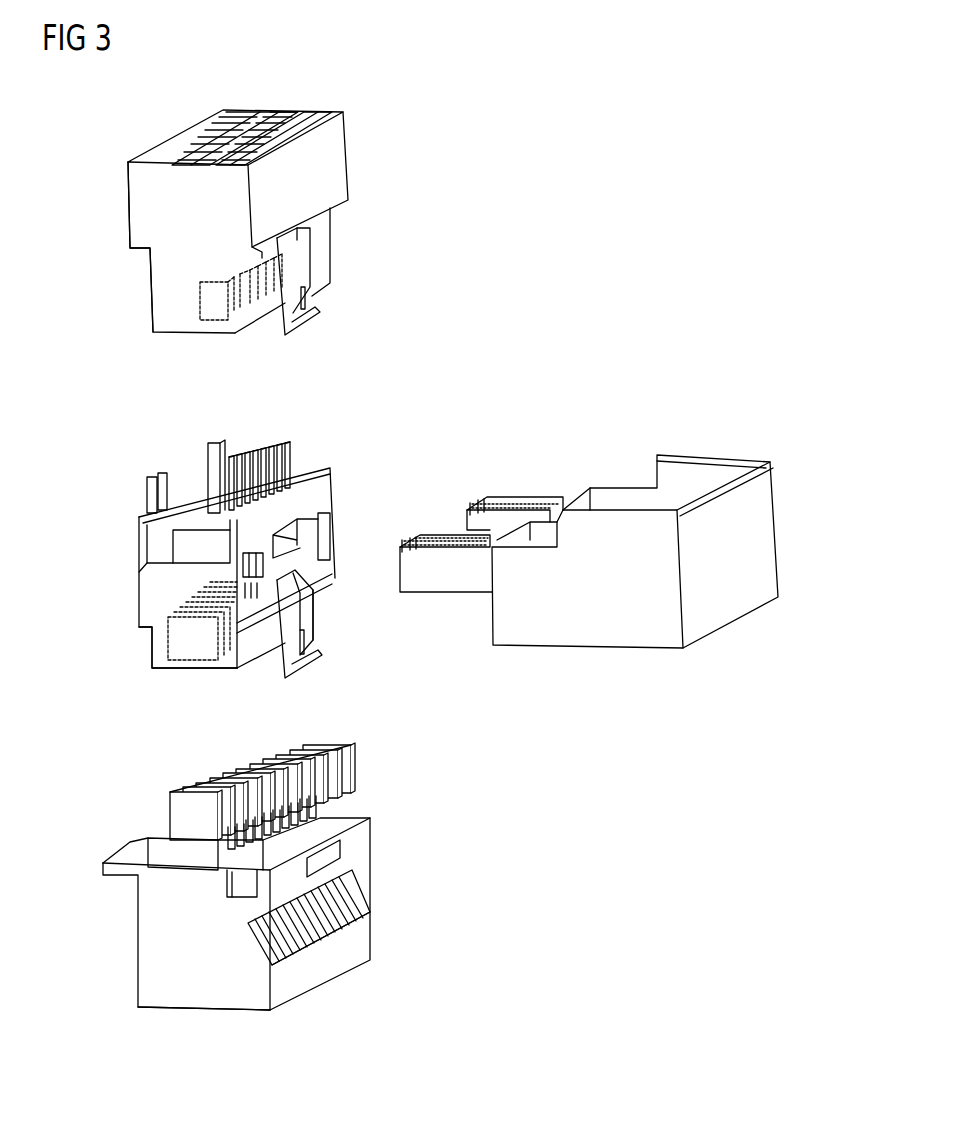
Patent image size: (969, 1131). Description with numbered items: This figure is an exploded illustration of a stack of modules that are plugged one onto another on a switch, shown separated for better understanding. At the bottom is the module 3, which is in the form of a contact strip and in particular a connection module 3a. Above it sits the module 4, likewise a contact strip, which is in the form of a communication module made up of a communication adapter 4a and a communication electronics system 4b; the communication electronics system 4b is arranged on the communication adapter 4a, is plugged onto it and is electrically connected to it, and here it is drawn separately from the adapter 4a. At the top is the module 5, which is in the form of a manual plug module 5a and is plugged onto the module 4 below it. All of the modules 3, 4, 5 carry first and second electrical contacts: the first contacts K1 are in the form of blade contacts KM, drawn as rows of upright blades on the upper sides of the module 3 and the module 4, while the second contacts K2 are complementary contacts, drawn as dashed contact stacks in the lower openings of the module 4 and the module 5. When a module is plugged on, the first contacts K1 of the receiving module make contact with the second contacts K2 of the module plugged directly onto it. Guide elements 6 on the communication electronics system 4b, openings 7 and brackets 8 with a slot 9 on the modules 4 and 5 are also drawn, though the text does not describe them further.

The module 3 is at (127, 998).
The connection module 3a is at (203, 1000).
The module 4 is at (135, 656).
The communication adapter 4a is at (178, 669).
The communication electronics system 4b is at (603, 633).
The module 5 is at (443, 168).
The manual plug module 5a is at (142, 212).
The guide element 6 is at (510, 520).
The opening 7 is at (243, 571).
The bracket / latching element 8 is at (310, 297).
The slot 9 is at (320, 615).
The first contacts K1 is at (300, 457).
The second contacts K2 is at (198, 302).
The blade contacts KM is at (208, 487).